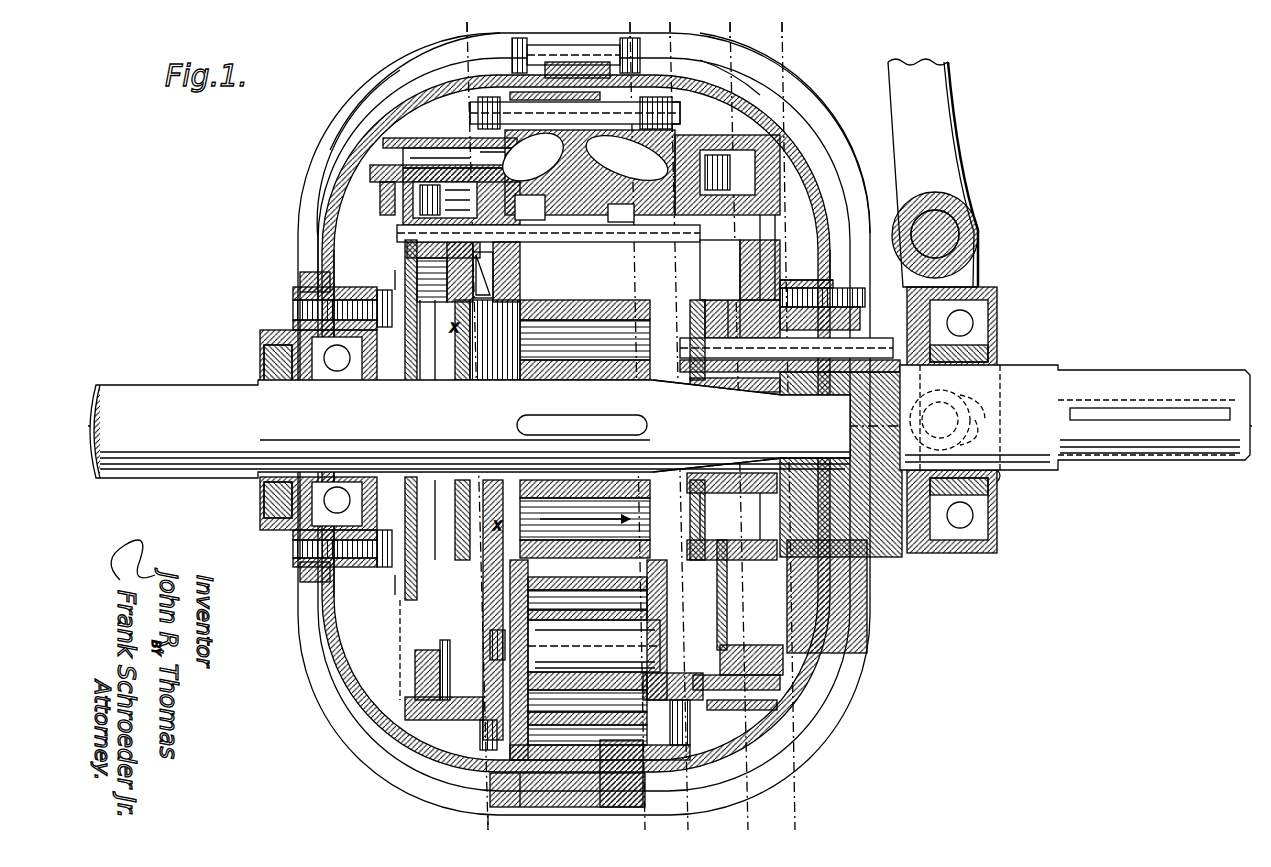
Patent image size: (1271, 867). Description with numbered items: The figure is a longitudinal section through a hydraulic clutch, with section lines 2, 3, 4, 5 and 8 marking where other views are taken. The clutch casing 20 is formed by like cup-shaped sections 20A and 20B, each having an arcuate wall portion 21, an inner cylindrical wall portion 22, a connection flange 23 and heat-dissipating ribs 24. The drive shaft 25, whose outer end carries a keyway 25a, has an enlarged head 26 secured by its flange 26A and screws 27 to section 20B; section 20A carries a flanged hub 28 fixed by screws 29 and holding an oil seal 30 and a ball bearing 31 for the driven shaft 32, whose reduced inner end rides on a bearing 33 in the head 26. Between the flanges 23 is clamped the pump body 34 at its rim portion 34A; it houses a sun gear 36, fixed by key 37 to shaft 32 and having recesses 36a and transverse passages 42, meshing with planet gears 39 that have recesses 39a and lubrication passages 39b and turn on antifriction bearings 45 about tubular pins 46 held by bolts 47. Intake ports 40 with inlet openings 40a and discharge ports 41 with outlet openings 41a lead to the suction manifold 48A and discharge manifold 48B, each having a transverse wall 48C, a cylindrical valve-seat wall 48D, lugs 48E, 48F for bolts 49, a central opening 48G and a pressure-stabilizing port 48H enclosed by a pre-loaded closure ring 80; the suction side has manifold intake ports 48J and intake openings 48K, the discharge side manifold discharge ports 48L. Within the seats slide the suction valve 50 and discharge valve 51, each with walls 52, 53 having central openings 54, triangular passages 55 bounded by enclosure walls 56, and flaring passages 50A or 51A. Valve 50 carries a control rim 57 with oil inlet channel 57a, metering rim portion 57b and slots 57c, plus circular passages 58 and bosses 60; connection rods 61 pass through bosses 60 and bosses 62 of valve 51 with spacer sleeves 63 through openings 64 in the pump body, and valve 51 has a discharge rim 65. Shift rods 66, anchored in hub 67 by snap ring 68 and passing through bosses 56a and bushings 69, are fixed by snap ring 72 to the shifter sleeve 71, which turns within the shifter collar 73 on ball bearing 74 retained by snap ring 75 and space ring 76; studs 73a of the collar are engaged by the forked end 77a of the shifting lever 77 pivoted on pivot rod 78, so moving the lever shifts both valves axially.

The section line 2- 2 is at (787, 46).
The section line 3- 3 is at (735, 35).
The section line 4- 4 is at (676, 45).
The section line 5- 5 is at (635, 53).
The section line 8- 8 is at (467, 55).
The clutch casing 20 is at (385, 100).
The casing section 20A is at (368, 108).
The casing section 20B is at (785, 133).
The arcuate wall portion 21 is at (368, 118).
The cylindrical wall portion 22 is at (300, 290).
The connection flange 23 is at (548, 796).
The ribs 24 is at (360, 72).
The drive shaft 25 is at (1050, 367).
The keyway 25a is at (1122, 410).
The enlarged head 26 is at (850, 496).
The flange 26A is at (840, 262).
The screws 27 is at (848, 292).
The flanged hub 28 is at (268, 340).
The screws 29 is at (295, 302).
The oil seal 30 is at (278, 352).
The ball bearing 31 is at (335, 352).
The driven shaft 32 is at (176, 395).
The bearing 33 is at (775, 415).
The pump body 34 is at (525, 80).
The peripheral rim portion 34A is at (512, 66).
The sun gear 36 is at (620, 500).
The circular recesses 36a is at (560, 530).
The key 37 is at (585, 430).
The planet gear 39 is at (688, 735).
The circular recesses 39a is at (485, 725).
The transverse passages 39b is at (700, 724).
The fluid intake port 40 is at (478, 105).
The inlet openings 40a is at (480, 118).
The fluid discharge port 41 is at (665, 113).
The outlet openings 41a is at (712, 133).
The transverse open passages 42 is at (612, 352).
The antifriction bearing 45 is at (670, 610).
The tubular pin 46 is at (670, 622).
The bolt 47 is at (675, 645).
The suction manifold 48A is at (370, 690).
The discharge manifold 48B is at (800, 680).
The transverse wall portion 48C is at (442, 620).
The cylindrical wall portion 48D is at (335, 168).
The lug 48E is at (470, 760).
The lug 48F is at (450, 84).
The central opening 48G is at (574, 430).
The pressure-stabilizing port 48H is at (345, 158).
The manifold intake ports 48J is at (445, 140).
The intake openings 48K is at (375, 185).
The manifold discharge ports 48L is at (735, 145).
The bolts 49 is at (738, 92).
The suction valve 50 is at (678, 45).
The air intake passages 50A is at (395, 280).
The fluid discharge control valve 51 is at (790, 601).
The discharge passages 51A is at (787, 195).
The wall 52 is at (430, 350).
The wall 53 is at (791, 268).
The central openings 54 is at (430, 368).
The fluid passages 55 is at (400, 626).
The enclosure walls 56 is at (440, 645).
The bosses 56a is at (742, 390).
The fluid flow control rim 57 is at (375, 228).
The oil inlet channel 57a is at (360, 225).
The fluid metering control rim portion 57b is at (370, 200).
The oil inlet openings 57c is at (340, 775).
The circular passages 58 is at (425, 330).
The bosses 60 is at (465, 320).
The connection rods 61 is at (390, 258).
The bosses 62 is at (715, 262).
The spacers 63 is at (560, 245).
The openings 64 is at (621, 213).
The fluid discharge control rim 65 is at (822, 162).
The valve shift rods 66 is at (855, 342).
The hub 67 is at (728, 300).
The snap ring 68 is at (717, 319).
The bushings 69 is at (850, 320).
The shifter sleeve 71 is at (1000, 476).
The snap ring 72 is at (850, 305).
The shifter collar 73 is at (995, 292).
The studs 73a is at (1000, 420).
The ball-bearing 74 is at (995, 315).
The snap ring 75 is at (1000, 354).
The space ring 76 is at (990, 340).
The valve shifting lever 77 is at (972, 168).
The forked end 77a is at (1000, 392).
The pivot rod 78 is at (945, 232).
The closure rings 80 is at (387, 140).